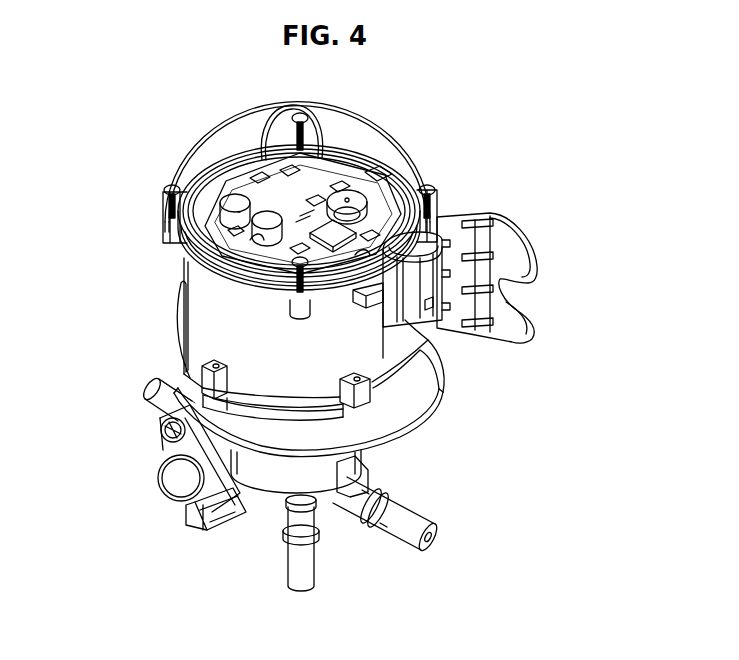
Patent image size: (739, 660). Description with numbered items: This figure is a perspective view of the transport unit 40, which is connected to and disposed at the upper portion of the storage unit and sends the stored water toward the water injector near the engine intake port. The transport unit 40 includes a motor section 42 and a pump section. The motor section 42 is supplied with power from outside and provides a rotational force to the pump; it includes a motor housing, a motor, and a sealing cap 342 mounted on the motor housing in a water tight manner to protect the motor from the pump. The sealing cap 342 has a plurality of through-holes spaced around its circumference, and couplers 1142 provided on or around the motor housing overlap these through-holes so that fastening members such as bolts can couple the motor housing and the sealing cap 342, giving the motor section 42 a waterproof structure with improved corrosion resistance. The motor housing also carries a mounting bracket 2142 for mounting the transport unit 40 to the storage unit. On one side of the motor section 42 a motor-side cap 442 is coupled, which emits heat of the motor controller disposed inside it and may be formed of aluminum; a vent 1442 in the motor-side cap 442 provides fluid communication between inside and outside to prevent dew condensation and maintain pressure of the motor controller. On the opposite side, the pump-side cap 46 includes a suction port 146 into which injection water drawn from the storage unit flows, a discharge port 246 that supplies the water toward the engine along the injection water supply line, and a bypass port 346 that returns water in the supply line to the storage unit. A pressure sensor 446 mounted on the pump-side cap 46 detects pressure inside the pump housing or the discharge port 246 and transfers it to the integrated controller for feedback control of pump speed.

The transport unit 40 is at (493, 192).
The motor section 42 is at (156, 213).
The pump-side cap 46 is at (393, 448).
The suction port 146 is at (395, 528).
The discharge port 246 is at (152, 389).
The bypass port 346 is at (300, 563).
The pressure sensor 446 is at (174, 478).
The sealing cap 342 is at (400, 402).
The motor-side cap 442 is at (404, 146).
The couplers 1142 is at (396, 440).
The vent 1442 is at (348, 196).
The mounting bracket 2142 is at (513, 259).